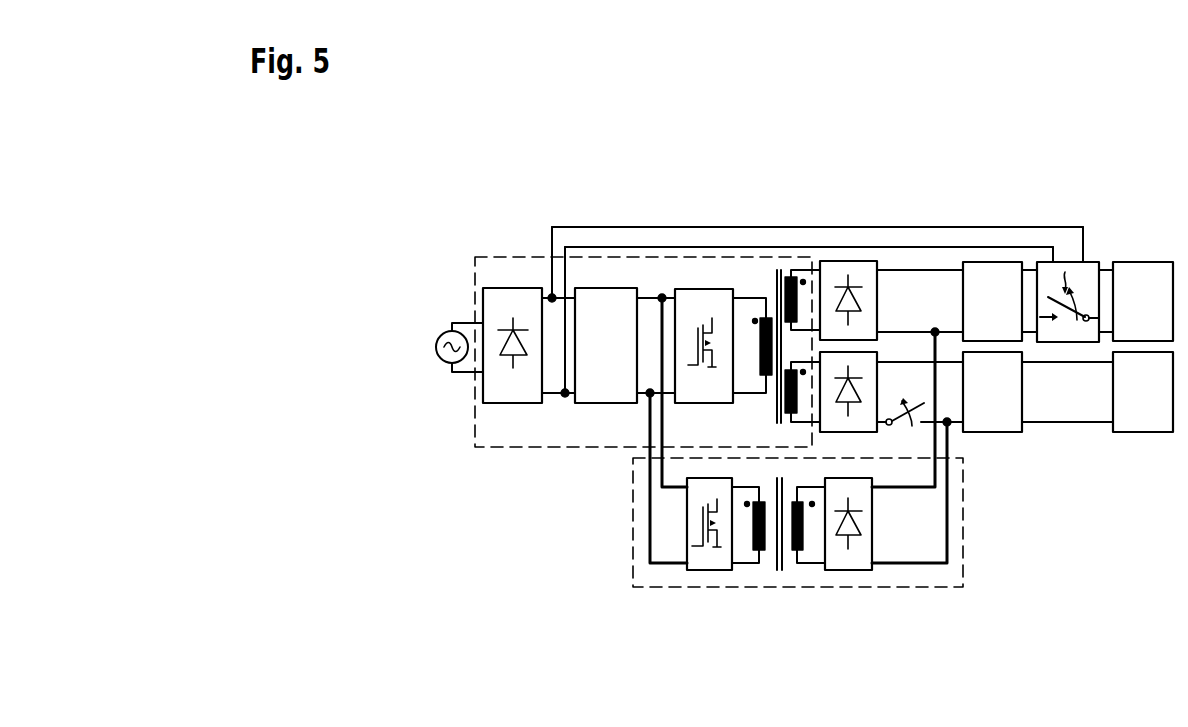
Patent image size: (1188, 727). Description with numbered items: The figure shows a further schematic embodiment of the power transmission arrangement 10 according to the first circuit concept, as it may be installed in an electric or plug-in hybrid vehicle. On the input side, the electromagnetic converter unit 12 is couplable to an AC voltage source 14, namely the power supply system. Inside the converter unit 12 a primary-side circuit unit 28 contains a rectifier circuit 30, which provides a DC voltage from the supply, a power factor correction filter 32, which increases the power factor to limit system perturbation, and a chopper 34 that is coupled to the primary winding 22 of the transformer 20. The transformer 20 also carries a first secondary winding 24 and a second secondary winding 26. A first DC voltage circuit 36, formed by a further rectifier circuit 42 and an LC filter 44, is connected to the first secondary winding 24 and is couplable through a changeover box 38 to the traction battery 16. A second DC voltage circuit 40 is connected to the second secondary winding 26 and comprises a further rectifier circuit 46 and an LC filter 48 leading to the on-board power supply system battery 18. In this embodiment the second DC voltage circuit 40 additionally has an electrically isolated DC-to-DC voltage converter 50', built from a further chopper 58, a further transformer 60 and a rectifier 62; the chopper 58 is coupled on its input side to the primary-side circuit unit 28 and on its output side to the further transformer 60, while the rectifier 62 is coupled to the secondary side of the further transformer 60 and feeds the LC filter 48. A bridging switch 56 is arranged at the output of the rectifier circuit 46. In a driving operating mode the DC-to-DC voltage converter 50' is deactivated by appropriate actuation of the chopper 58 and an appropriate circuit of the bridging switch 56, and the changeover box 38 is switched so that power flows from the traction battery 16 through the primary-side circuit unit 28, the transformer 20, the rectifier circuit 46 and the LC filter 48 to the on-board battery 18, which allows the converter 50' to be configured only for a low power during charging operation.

The power transmission arrangement 10 is at (880, 147).
The electromagnetic converter unit 12 is at (511, 455).
The AC voltage source 14 is at (447, 333).
The traction battery 16 is at (1155, 262).
The on-board power supply system battery 18 is at (1157, 432).
The transformer 20 is at (756, 220).
The primary winding 22 is at (758, 334).
The first secondary winding 24 is at (785, 272).
The second secondary winding 26 is at (785, 398).
The primary-side circuit unit 28 is at (608, 218).
The rectifier circuit 30 is at (508, 288).
The power factor correction filter 32 is at (607, 403).
The chopper 34 is at (688, 289).
The first DC voltage circuit 36 is at (934, 217).
The changeover box 38 is at (1065, 262).
The second DC voltage circuit 40 is at (1003, 590).
The further rectifier circuit 42 is at (848, 262).
The LC filter 44 is at (990, 262).
The further rectifier circuit 46 is at (877, 372).
The LC filter 48 is at (990, 432).
The DC-to-DC voltage converter 50' is at (780, 566).
The bridging switch 56 is at (908, 425).
The further chopper 58 is at (710, 570).
The further transformer 60 is at (765, 592).
The rectifier 62 is at (848, 570).